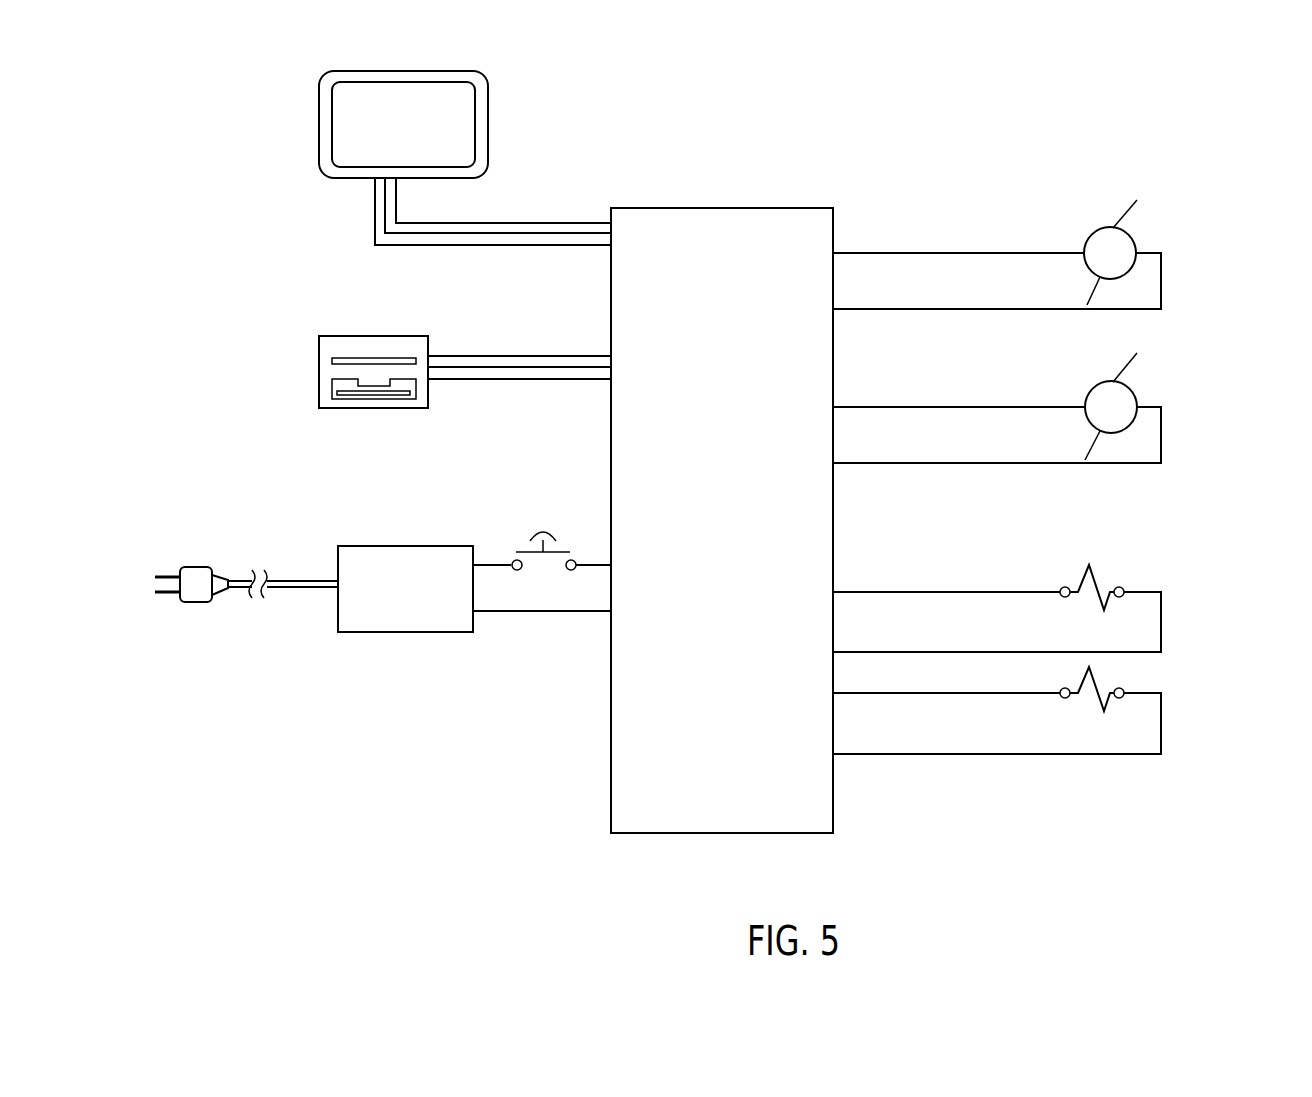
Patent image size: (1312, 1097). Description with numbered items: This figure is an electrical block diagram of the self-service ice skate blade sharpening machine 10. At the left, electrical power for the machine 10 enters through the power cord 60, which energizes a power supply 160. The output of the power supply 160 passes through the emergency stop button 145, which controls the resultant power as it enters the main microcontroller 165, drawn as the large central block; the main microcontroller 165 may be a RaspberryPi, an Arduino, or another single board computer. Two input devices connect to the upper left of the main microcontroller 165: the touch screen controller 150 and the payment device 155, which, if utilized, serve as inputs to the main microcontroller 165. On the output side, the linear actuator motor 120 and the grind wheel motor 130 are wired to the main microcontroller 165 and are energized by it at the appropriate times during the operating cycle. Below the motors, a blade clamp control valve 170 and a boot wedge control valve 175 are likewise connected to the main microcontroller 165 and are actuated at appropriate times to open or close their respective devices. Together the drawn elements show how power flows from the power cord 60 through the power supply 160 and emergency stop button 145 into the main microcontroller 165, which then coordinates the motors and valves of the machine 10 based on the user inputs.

The self-service ice skate blade sharpening machine 10 is at (733, 500).
The power cord 60 is at (247, 583).
The linear actuator motor 120 is at (1130, 247).
The grind wheel motor 130 is at (1133, 392).
The emergency stop button 145 is at (520, 542).
The touch screen controller 150 is at (453, 118).
The payment device 155 is at (332, 349).
The power supply 160 is at (415, 617).
The main microcontroller 165 is at (745, 308).
The blade clamp control valve 170 is at (1113, 602).
The boot wedge control valve 175 is at (1113, 711).